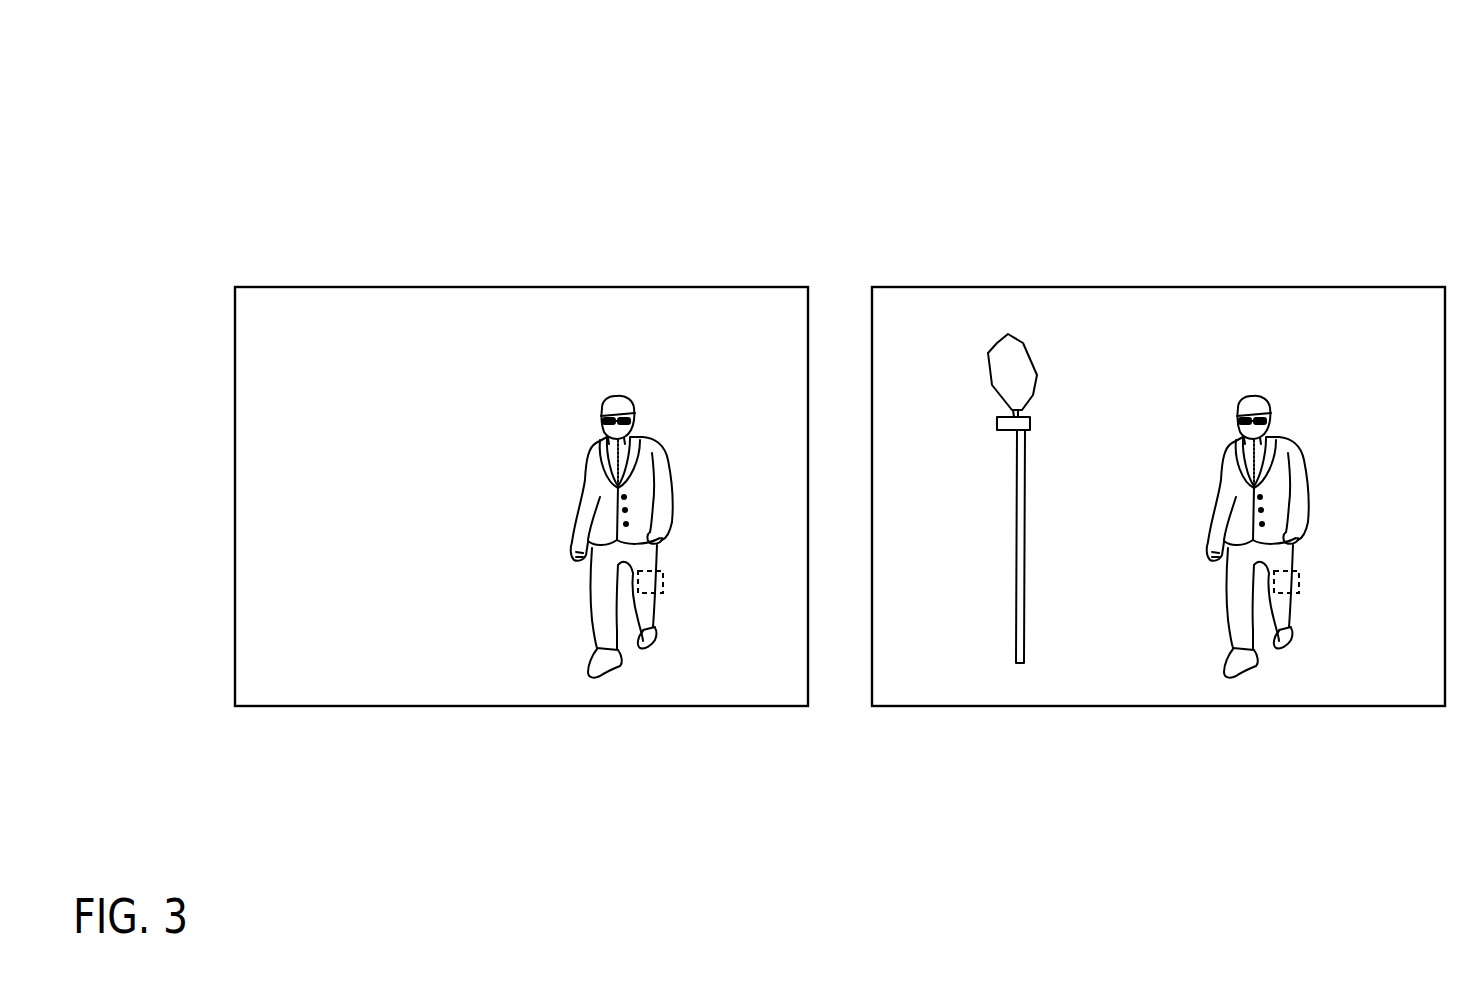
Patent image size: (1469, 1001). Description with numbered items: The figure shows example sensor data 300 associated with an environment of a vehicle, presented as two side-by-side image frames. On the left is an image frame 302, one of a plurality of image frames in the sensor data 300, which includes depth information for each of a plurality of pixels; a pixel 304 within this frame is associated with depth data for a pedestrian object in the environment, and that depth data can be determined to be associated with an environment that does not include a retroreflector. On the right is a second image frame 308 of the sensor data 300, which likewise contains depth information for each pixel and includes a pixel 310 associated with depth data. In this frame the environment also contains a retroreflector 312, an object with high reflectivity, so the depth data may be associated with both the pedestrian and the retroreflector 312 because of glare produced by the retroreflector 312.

The sensor data 300 is at (164, 66).
The image frame 302 is at (262, 287).
The pixel 304 is at (663, 580).
The image frame 308 is at (888, 287).
The pixel 310 is at (1299, 580).
The retroreflector 312 is at (989, 382).